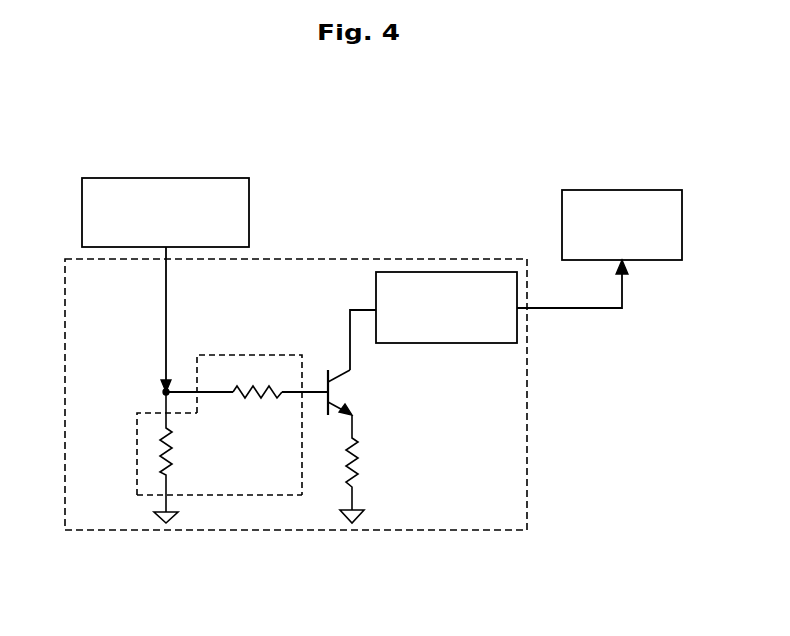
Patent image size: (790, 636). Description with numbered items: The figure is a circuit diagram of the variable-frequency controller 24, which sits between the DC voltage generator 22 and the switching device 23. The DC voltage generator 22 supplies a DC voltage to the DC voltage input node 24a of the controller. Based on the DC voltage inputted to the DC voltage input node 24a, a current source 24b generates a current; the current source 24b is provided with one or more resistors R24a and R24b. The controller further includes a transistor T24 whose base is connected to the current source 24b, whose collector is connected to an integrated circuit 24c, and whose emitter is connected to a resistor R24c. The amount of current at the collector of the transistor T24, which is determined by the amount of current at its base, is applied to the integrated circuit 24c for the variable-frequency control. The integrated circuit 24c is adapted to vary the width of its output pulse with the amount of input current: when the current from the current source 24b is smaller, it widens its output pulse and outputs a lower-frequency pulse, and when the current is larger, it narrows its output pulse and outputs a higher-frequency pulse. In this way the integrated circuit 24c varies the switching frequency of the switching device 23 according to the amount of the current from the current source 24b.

The DC voltage generator 22 is at (165, 212).
The switching device 23 is at (622, 225).
The variable-frequency controller 24 is at (297, 260).
The DC voltage input node 24a is at (161, 389).
The current source 24b is at (255, 354).
The integrated circuit 24c is at (446, 307).
The resistor R24a is at (186, 457).
The resistor R24b is at (263, 384).
The resistor R24c is at (371, 469).
The transistor T24 is at (355, 392).